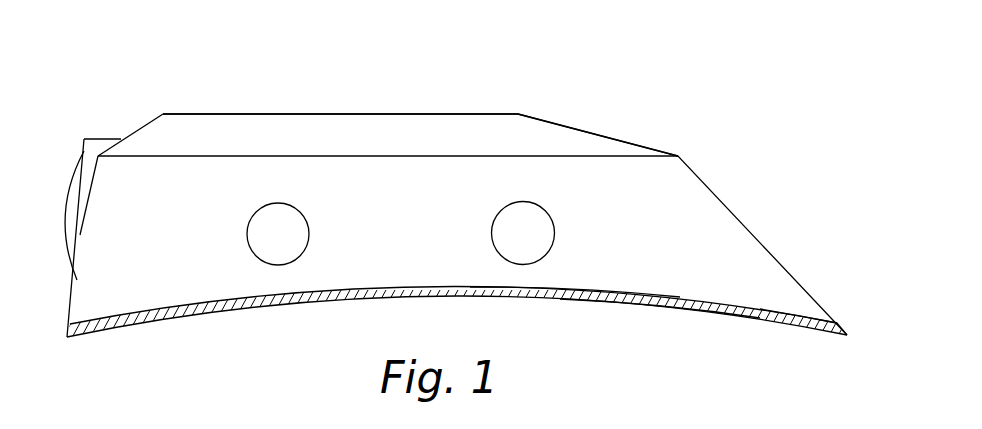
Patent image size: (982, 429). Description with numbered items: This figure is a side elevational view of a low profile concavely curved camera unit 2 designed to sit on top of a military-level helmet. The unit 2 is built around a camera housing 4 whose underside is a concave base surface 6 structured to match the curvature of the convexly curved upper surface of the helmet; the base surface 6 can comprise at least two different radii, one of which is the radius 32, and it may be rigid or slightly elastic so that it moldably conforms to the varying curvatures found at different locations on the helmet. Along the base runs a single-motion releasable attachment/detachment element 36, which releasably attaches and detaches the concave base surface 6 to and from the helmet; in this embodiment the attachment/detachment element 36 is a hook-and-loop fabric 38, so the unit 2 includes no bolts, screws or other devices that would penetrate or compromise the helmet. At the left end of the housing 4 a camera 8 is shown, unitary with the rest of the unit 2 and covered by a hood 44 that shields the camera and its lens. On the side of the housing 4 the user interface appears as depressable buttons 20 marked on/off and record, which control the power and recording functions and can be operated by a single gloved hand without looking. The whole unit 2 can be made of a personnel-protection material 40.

The low profile concavely curved camera unit 2 is at (680, 143).
The camera housing 4 is at (578, 131).
The personnel-protection material 40 is at (210, 132).
The hood 44 is at (111, 137).
The camera 8 is at (84, 151).
The depressable buttons 20 is at (302, 213).
The concave base surface 6 is at (392, 303).
The radius 32 is at (575, 303).
The hook-and-loop fabric 38 is at (653, 308).
The single-motion releasable attachment/detachment element 36 is at (773, 308).